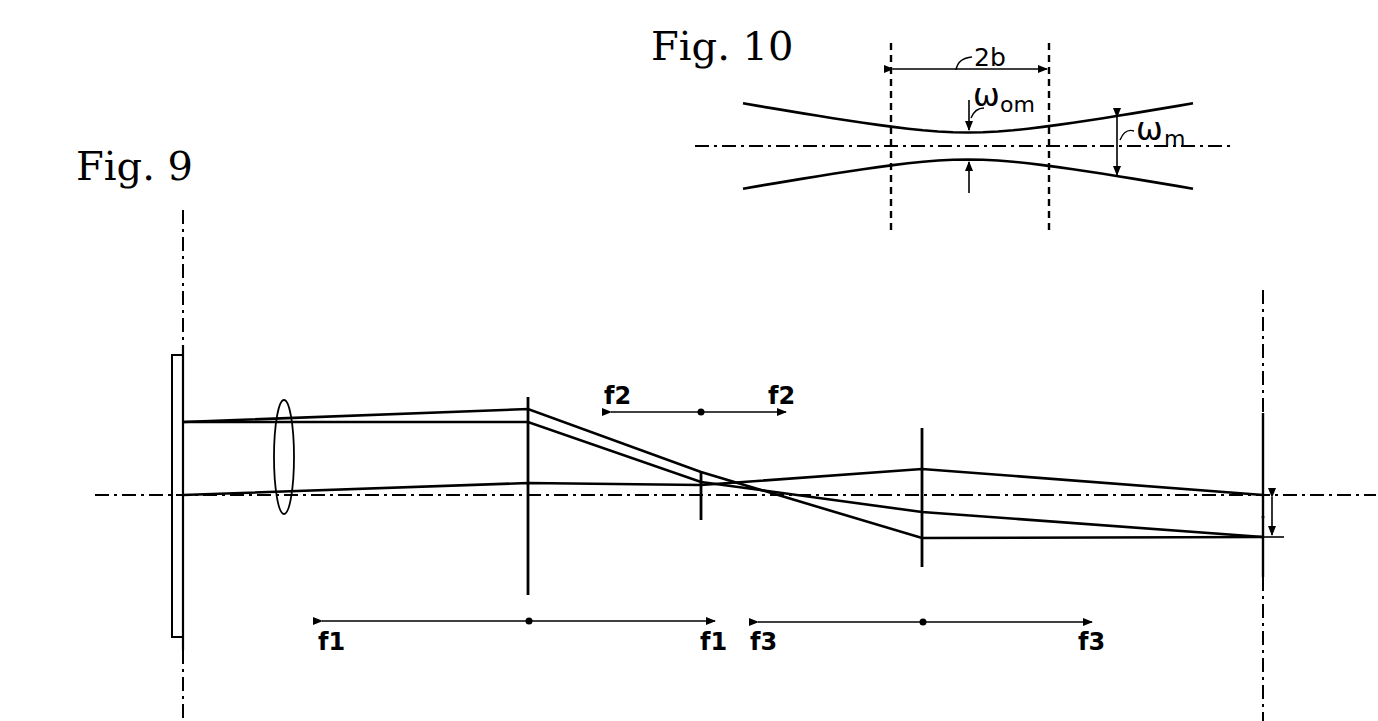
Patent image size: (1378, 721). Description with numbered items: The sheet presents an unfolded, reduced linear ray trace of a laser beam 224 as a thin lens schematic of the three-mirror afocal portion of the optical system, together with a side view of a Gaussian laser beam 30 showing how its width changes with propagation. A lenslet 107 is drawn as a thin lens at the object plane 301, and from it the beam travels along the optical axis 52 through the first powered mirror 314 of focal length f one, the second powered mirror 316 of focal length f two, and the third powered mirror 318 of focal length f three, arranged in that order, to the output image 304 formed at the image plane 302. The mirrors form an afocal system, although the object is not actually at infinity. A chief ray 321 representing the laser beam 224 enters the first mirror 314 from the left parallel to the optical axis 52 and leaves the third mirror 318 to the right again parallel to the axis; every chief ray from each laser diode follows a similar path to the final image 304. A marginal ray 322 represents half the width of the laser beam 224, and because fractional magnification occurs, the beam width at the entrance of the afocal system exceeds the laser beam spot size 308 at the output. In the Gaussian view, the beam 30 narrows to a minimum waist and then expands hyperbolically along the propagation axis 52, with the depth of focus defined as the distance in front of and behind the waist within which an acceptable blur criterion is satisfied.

In FIG. 10, the laser beam 30 is at (788, 103).
In FIG. 9, the optical axis 52 is at (131, 494).
In FIG. 10, the optical axis 52 is at (1226, 146).
In FIG. 9, the lenslet 107 is at (180, 380).
In FIG. 9, the laser beam 224 is at (285, 402).
In FIG. 9, the object plane 301 is at (185, 282).
In FIG. 9, the image plane 302 is at (1262, 358).
In FIG. 9, the output image 304 is at (1261, 517).
In FIG. 9, the laser beam spot size 308 is at (1276, 518).
In FIG. 9, the first powered mirror 314 is at (532, 400).
In FIG. 9, the second powered mirror 316 is at (705, 505).
In FIG. 9, the third powered mirror 318 is at (926, 436).
In FIG. 9, the chief ray 321 is at (410, 425).
In FIG. 9, the marginal ray 322 is at (406, 412).